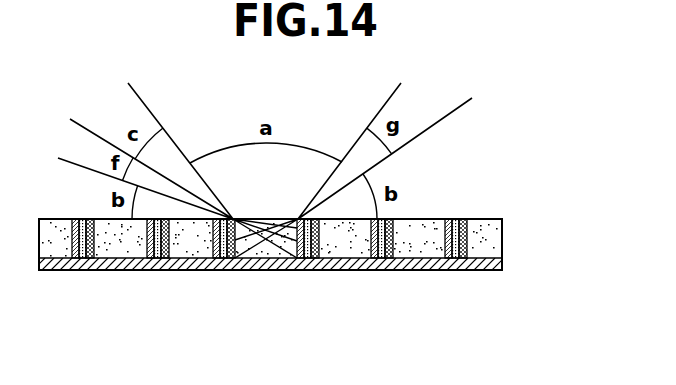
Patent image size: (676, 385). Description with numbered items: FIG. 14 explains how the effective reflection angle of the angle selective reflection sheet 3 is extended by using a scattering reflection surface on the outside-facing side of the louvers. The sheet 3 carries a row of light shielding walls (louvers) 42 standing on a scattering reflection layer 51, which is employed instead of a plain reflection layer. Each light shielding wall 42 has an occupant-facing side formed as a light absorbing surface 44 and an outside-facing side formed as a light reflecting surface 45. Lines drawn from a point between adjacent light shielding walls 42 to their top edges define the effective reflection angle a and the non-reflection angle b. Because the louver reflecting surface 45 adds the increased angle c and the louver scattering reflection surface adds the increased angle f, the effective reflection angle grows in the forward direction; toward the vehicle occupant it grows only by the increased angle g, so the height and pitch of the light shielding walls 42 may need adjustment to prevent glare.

The angle selective reflection sheet 3 is at (302, 281).
The scattering reflection layer 51 is at (479, 271).
The light reflecting surface 45 is at (148, 247).
The light shielding wall (louver) 42 is at (158, 250).
The light absorbing surface 44 is at (170, 250).